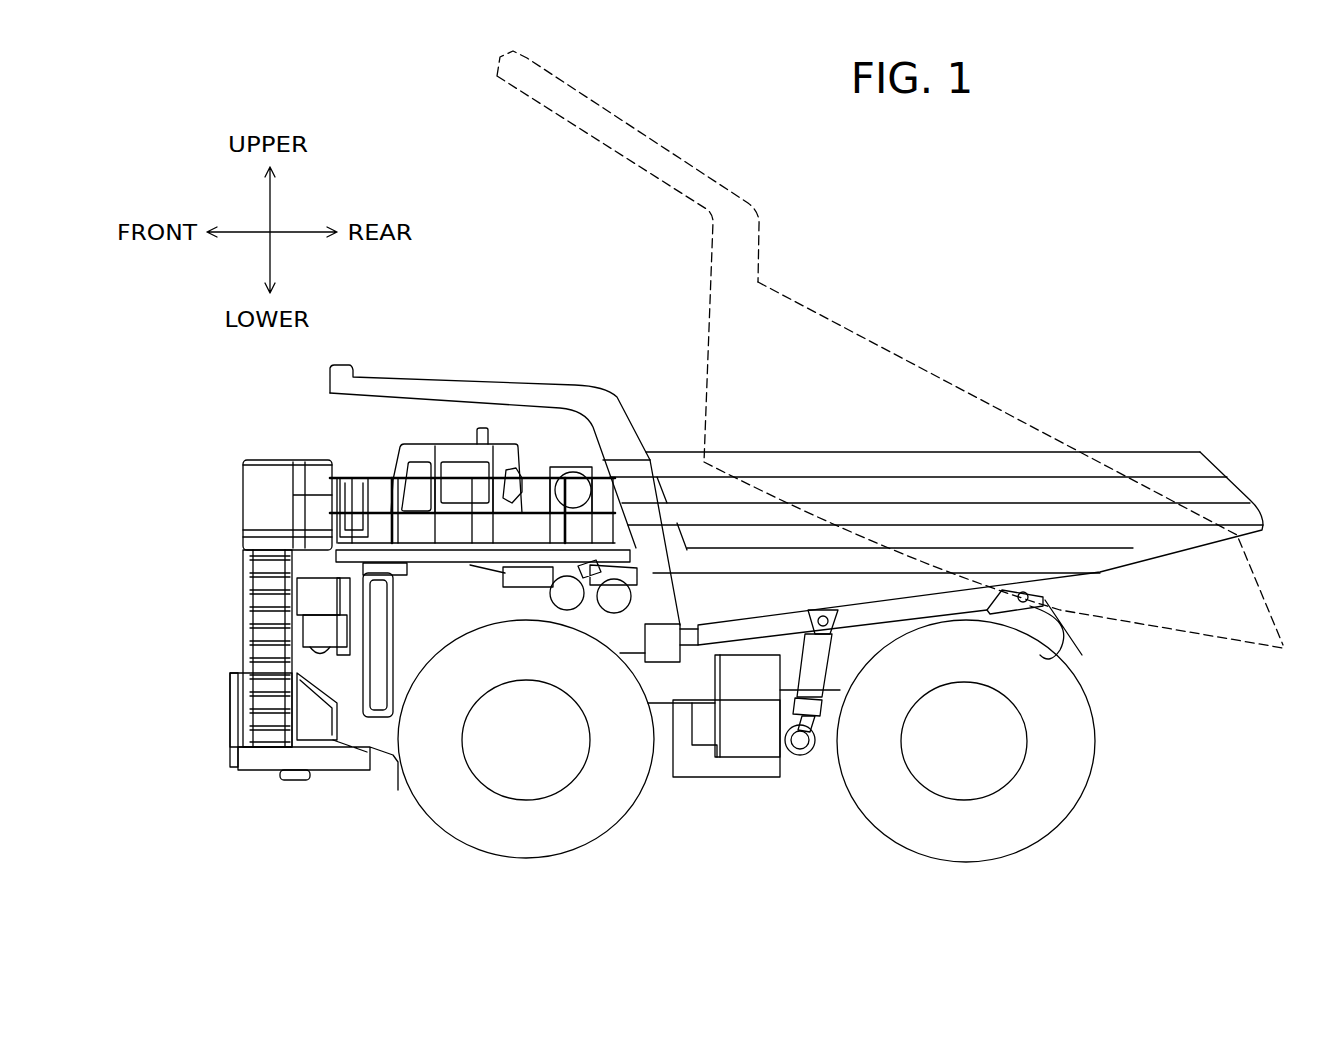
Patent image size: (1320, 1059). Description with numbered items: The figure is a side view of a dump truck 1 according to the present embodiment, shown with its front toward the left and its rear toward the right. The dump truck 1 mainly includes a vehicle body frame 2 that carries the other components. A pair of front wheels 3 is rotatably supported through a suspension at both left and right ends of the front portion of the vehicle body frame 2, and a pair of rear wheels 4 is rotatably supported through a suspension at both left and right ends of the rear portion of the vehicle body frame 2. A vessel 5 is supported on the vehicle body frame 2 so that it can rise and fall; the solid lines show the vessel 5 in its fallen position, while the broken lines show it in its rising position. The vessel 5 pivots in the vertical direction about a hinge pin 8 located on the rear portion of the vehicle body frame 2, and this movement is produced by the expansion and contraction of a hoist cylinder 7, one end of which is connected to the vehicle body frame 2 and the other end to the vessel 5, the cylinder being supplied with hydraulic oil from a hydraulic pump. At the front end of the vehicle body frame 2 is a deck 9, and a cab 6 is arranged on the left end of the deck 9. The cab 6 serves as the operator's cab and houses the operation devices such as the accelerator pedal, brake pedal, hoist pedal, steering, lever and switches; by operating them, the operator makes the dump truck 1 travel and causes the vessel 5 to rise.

The dump truck 1 is at (1163, 376).
The vehicle body frame 2 is at (668, 695).
The front wheels 3 is at (438, 805).
The rear wheels 4 is at (1073, 783).
The vessel 5 is at (592, 383).
The cab 6 is at (421, 440).
The hoist cylinder 7 is at (838, 772).
The hinge pin 8 is at (1050, 625).
The deck 9 is at (545, 465).